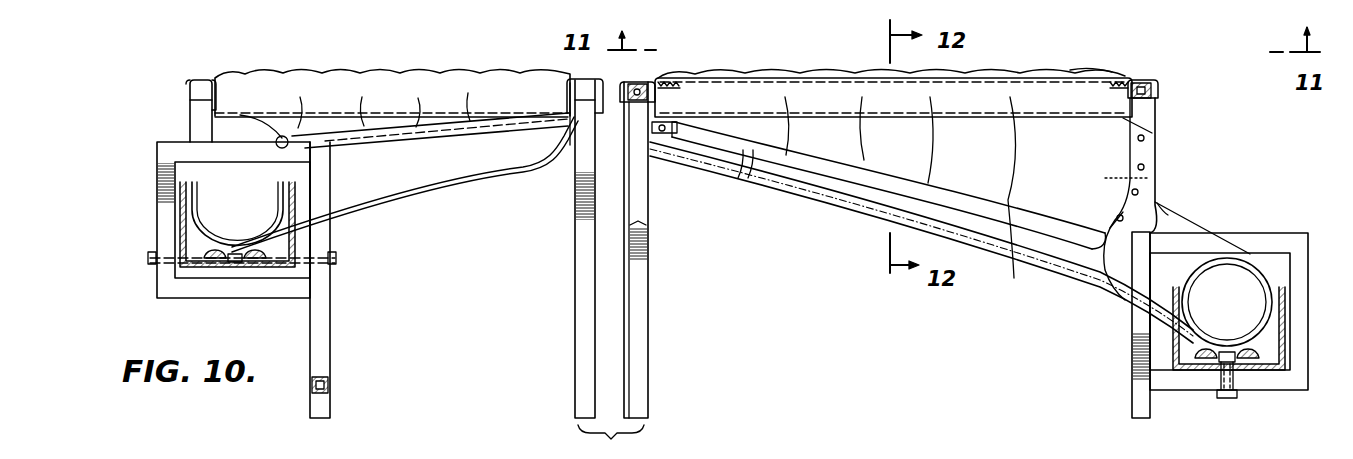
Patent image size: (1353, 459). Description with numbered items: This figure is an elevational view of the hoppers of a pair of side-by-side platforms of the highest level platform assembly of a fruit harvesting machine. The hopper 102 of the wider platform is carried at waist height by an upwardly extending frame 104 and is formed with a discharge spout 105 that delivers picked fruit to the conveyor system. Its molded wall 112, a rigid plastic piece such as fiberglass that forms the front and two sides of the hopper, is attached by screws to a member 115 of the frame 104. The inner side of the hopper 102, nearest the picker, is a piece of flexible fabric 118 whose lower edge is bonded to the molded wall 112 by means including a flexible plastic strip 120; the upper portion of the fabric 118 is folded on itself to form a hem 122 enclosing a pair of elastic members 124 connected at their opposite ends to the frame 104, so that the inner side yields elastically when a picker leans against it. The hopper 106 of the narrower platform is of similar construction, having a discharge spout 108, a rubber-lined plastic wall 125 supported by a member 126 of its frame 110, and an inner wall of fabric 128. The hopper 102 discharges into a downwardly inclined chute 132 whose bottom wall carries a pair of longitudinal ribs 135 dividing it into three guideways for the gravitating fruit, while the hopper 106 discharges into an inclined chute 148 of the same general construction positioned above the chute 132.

The hopper 102 is at (905, 185).
The frame 104 is at (1137, 393).
The discharge spout 105 is at (1262, 270).
The hopper 106 is at (422, 144).
The discharge spout 108 is at (197, 229).
The frame 110 is at (328, 343).
The molded wall 112 is at (783, 177).
The frame member 115 is at (1158, 87).
The flexible fabric 118 is at (1092, 152).
The flexible plastic strip 120 is at (1018, 201).
The hem 122 is at (820, 74).
The elastic members 124 is at (1007, 77).
The plastic wall 125 is at (500, 160).
The frame member 126 is at (197, 108).
The fabric inner wall 128 is at (434, 82).
The inclined chute 132 is at (1290, 322).
The longitudinal ribs 135 is at (258, 260).
The inclined chute 148 is at (182, 211).